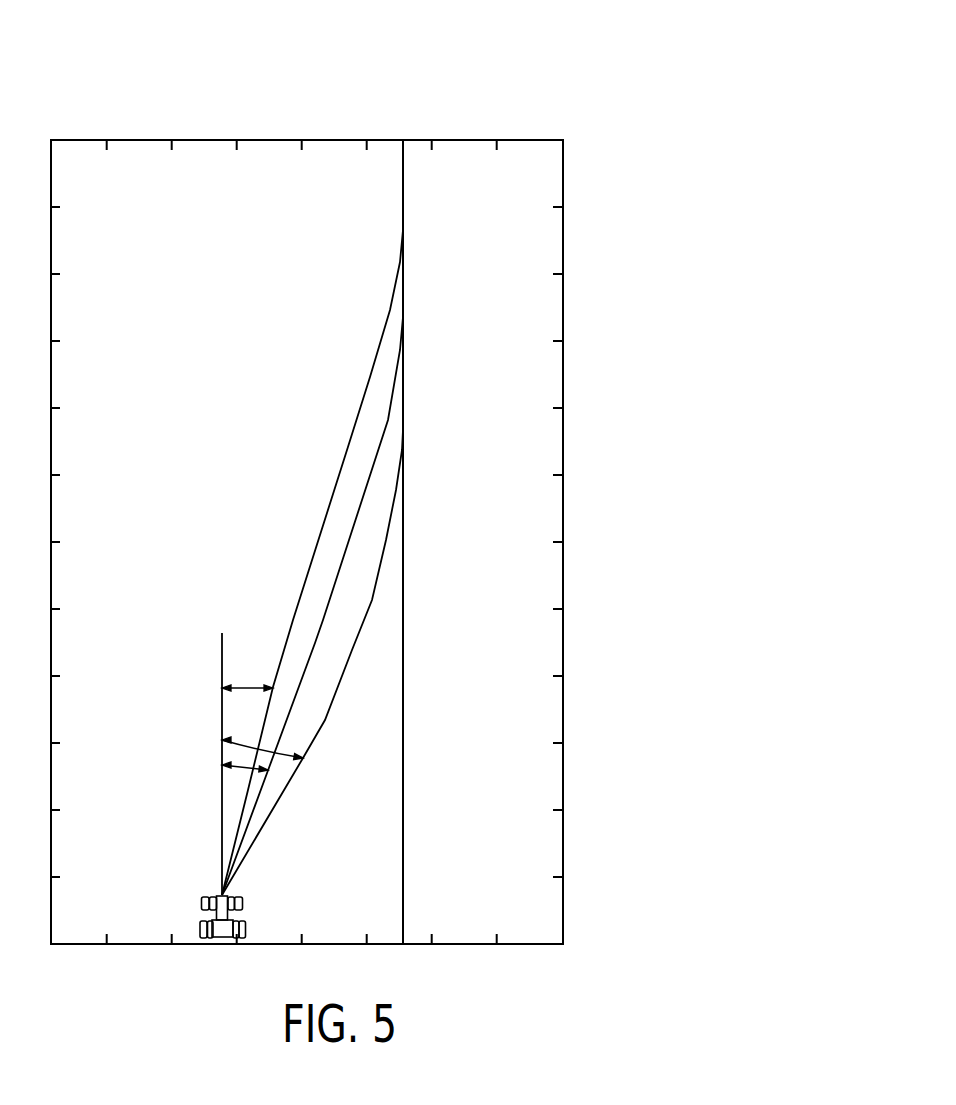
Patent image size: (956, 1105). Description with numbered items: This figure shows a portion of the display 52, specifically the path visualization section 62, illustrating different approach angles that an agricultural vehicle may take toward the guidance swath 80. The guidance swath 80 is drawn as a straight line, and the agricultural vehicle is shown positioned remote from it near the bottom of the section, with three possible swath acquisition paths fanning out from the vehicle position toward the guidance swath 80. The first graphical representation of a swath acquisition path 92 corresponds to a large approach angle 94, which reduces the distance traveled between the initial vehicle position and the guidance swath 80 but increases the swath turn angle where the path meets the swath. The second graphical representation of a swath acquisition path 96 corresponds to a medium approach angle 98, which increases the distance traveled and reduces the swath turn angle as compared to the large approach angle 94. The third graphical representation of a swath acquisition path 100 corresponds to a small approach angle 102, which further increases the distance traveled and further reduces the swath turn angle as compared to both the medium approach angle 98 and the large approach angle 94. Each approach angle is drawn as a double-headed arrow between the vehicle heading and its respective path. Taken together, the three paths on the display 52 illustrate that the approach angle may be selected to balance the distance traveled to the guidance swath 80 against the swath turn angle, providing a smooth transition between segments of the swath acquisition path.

The display 52 is at (368, 492).
The path visualization section 62 is at (597, 343).
The guidance swath 80 is at (404, 742).
The first graphical representation of a swath acquisition path 92 is at (325, 719).
The large approach angle 94 is at (247, 737).
The second graphical representation of a swath acquisition path 96 is at (315, 643).
The medium approach angle 98 is at (247, 772).
The third graphical representation of a swath acquisition path 100 is at (305, 576).
The small approach angle 102 is at (247, 683).